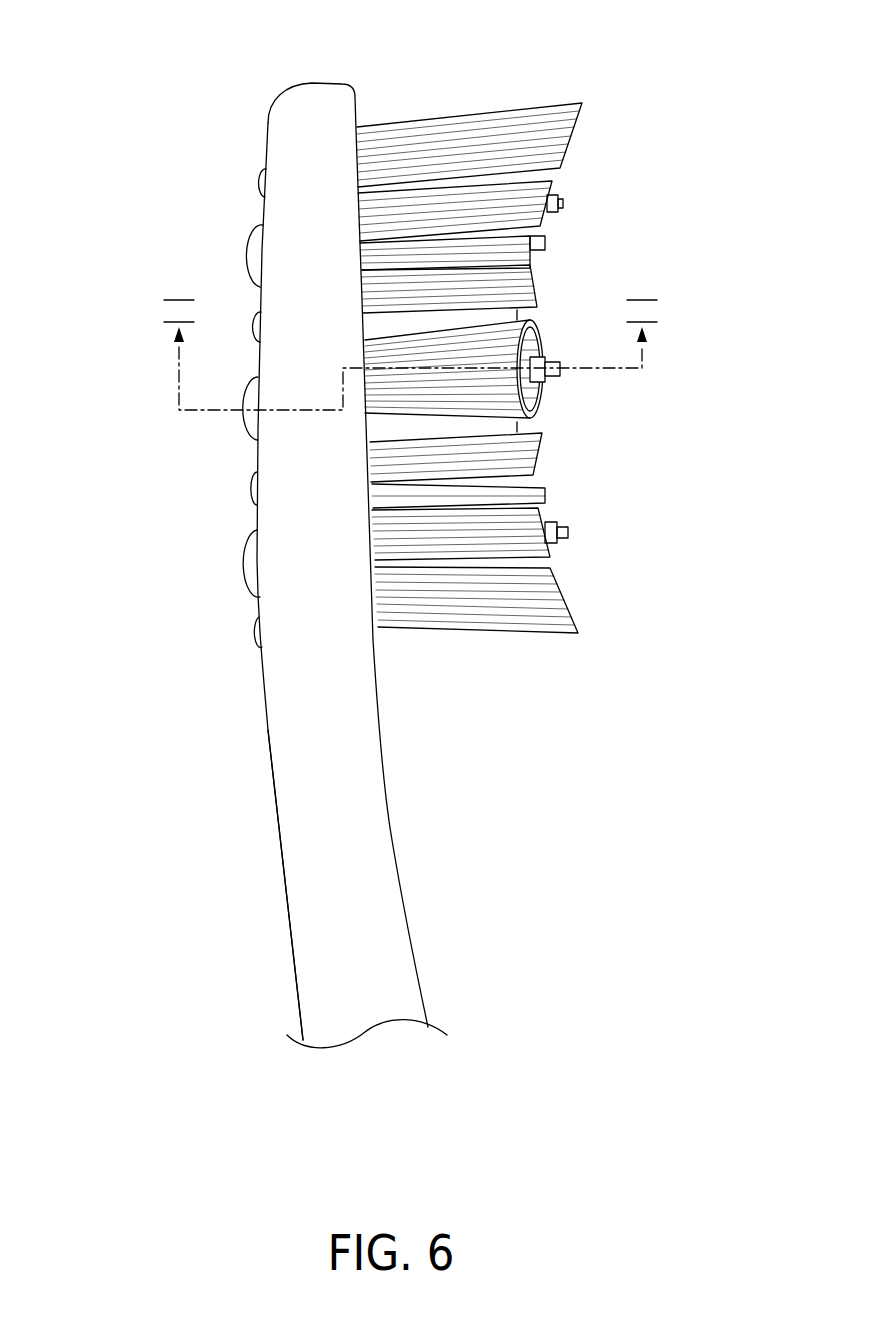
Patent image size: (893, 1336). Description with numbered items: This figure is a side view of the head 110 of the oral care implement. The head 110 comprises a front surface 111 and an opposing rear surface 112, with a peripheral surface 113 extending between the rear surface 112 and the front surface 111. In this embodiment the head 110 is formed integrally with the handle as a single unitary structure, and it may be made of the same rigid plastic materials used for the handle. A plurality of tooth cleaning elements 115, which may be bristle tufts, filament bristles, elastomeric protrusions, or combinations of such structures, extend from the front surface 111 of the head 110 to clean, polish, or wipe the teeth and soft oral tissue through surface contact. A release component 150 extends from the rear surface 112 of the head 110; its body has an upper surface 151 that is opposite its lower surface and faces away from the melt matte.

The head 110 is at (696, 122).
The front surface 111 is at (360, 113).
The rear surface 112 is at (257, 463).
The peripheral surface 113 is at (320, 587).
The tooth cleaning elements 115 is at (500, 607).
The release component 150 is at (259, 182).
The upper surface 151 is at (248, 263).